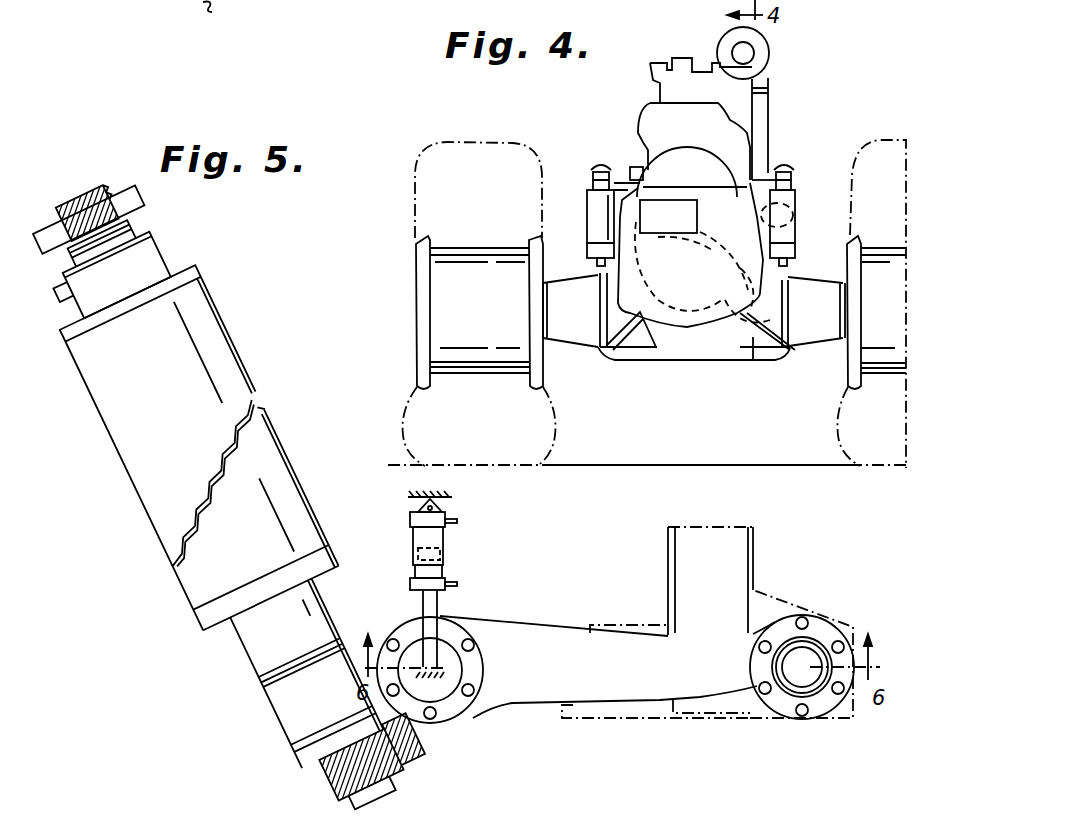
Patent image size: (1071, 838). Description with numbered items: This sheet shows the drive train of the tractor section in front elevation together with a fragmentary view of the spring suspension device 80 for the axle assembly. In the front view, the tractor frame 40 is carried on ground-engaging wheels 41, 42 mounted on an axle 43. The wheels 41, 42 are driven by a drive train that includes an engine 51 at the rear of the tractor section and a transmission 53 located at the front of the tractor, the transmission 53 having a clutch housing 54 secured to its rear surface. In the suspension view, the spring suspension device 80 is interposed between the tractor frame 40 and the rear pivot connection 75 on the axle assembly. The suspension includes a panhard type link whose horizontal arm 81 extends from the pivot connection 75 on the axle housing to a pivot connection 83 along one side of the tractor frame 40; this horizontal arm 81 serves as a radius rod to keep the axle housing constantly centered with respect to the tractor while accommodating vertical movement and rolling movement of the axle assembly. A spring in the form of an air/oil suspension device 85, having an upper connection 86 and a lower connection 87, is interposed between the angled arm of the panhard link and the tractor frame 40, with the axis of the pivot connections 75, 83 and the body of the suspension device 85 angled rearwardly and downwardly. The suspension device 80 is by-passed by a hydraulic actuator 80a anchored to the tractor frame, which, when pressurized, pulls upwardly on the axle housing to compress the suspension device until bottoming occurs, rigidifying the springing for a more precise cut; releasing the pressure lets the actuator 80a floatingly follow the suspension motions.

In FIG. 5, the tractor frame 40 is at (117, 193).
In FIG. 4, the wheel 41 is at (512, 124).
In FIG. 4, the wheel 42 is at (867, 147).
In FIG. 4, the axle 43 is at (415, 333).
In FIG. 4, the engine 51 is at (742, 93).
In FIG. 4, the transmission 53 is at (717, 197).
In FIG. 4, the clutch housing 54 is at (670, 337).
In FIG. 4, the spring suspension device 80 is at (770, 265).
In FIG. 5, the spring suspension device 80 is at (258, 390).
In FIG. 5, the hydraulic actuator 80a is at (445, 544).
In FIG. 5, the pivot connection 75 is at (450, 653).
In FIG. 5, the horizontal arm 81 is at (547, 637).
In FIG. 5, the pivot connection 83 is at (805, 648).
In FIG. 5, the air/oil suspension device 85 is at (220, 332).
In FIG. 5, the upper connection 86 is at (158, 250).
In FIG. 5, the lower connection 87 is at (330, 768).